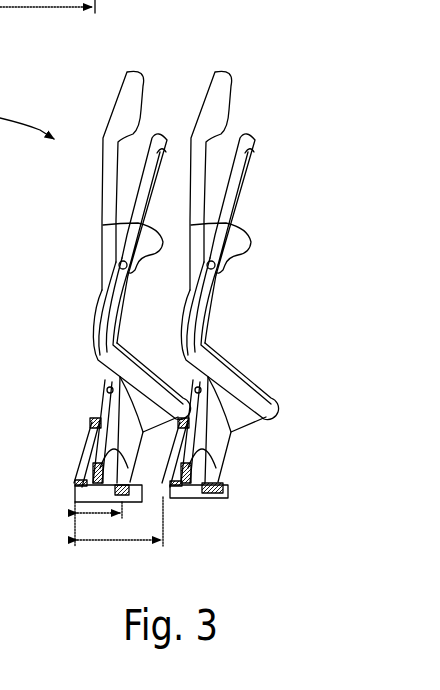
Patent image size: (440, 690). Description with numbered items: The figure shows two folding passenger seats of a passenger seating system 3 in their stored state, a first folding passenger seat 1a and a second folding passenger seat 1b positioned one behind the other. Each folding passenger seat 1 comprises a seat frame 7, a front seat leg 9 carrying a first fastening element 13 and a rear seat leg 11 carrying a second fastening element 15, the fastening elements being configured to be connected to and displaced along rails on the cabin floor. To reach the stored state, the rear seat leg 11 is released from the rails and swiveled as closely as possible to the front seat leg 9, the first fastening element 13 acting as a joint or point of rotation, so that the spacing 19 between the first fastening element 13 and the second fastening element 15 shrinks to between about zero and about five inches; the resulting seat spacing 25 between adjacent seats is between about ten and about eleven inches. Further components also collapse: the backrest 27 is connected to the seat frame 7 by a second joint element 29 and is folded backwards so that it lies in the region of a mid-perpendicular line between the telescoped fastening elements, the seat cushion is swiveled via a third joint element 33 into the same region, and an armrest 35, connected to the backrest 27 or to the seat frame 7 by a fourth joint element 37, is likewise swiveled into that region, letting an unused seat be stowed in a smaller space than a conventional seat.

The folding passenger seat 1 is at (7, 34).
The first folding passenger seat 1a is at (244, 77).
The second folding passenger seat 1b is at (149, 67).
The passenger seating system 3 is at (270, 200).
The seat frame 7 is at (110, 372).
The front seat leg 9 is at (80, 478).
The rear seat leg 11 is at (97, 416).
The first fastening element 13 is at (127, 496).
The second fastening element 15 is at (75, 484).
The spacing 19 is at (37, 9).
The seat spacing 25 is at (117, 543).
The backrest 27 is at (105, 224).
The second joint element 29 is at (118, 333).
The third joint element 33 is at (259, 142).
The armrest 35 is at (158, 135).
The fourth joint element 37 is at (110, 262).